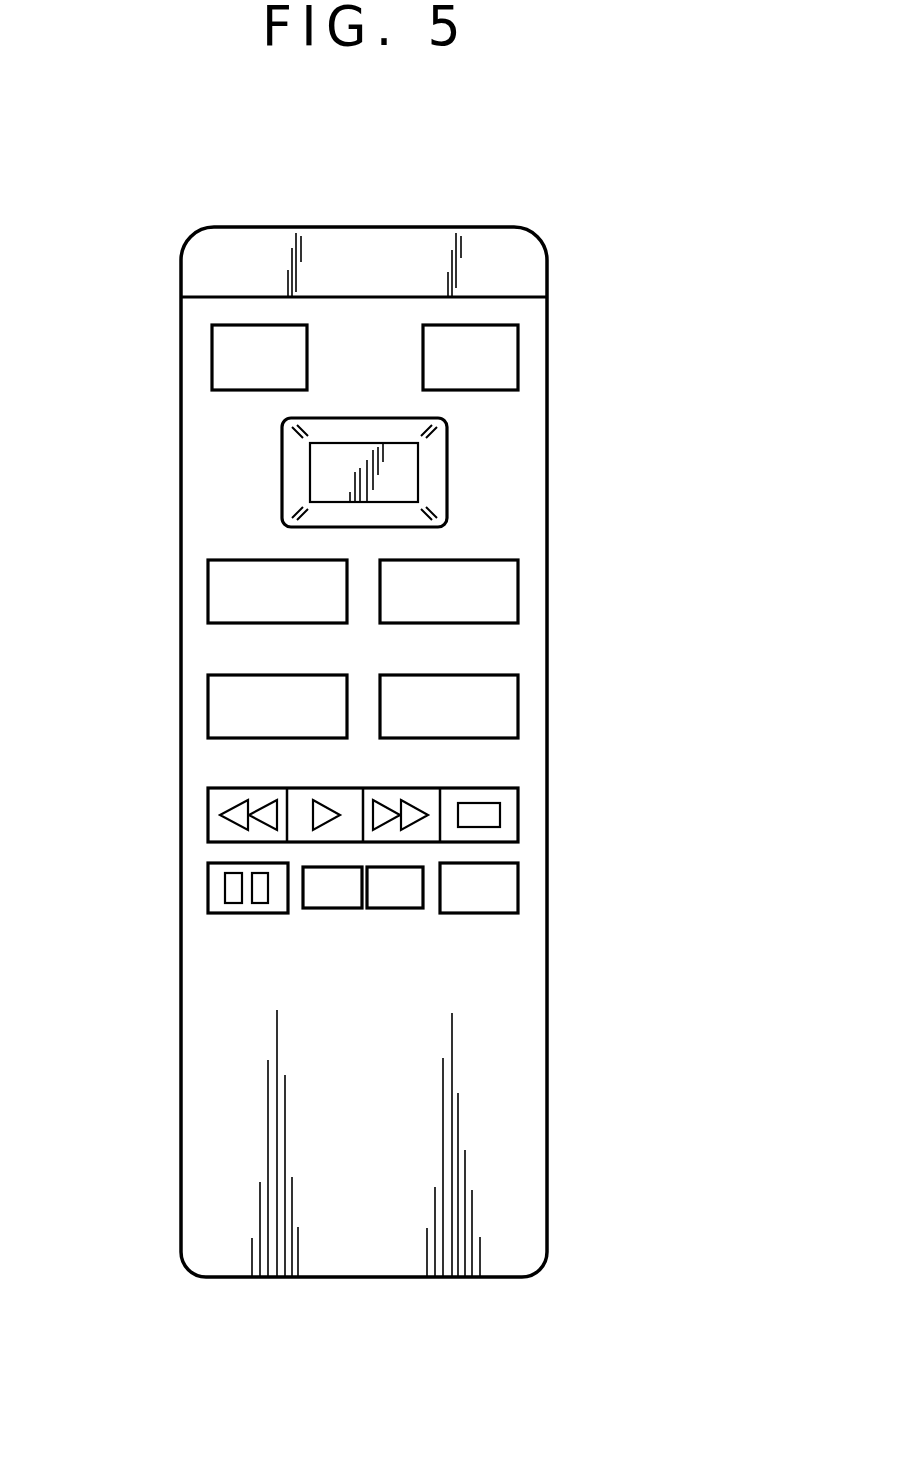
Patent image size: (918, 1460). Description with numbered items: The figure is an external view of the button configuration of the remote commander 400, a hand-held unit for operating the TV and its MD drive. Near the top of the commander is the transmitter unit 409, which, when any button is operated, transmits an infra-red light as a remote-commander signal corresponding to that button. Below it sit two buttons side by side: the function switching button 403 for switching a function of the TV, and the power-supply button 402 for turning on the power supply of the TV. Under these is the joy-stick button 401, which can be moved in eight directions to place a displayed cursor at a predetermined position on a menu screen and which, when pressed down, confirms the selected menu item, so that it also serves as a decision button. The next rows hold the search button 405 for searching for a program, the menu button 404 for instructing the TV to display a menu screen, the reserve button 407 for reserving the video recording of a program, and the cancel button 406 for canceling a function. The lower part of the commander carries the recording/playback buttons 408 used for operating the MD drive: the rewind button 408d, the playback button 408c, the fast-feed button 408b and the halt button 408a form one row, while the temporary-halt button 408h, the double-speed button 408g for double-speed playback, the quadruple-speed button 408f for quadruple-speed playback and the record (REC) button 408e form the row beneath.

The remote commander 400 is at (437, 218).
The joy-stick button 401 is at (413, 462).
The power-supply button 402 is at (519, 346).
The function switching button 403 is at (211, 359).
The menu button 404 is at (519, 583).
The search button 405 is at (207, 593).
The cancel button 406 is at (519, 699).
The reserve button 407 is at (207, 708).
The recording/playback buttons 408 is at (560, 785).
The halt button 408a is at (498, 772).
The fast-feed button 408b is at (400, 788).
The playback button 408c is at (318, 788).
The rewind button 408d is at (209, 820).
The record (REC) button 408e is at (483, 913).
The quadruple-speed button 408f is at (400, 908).
The double-speed button 408g is at (332, 908).
The temporary-halt button 408h is at (252, 913).
The transmitter unit 409 is at (541, 263).